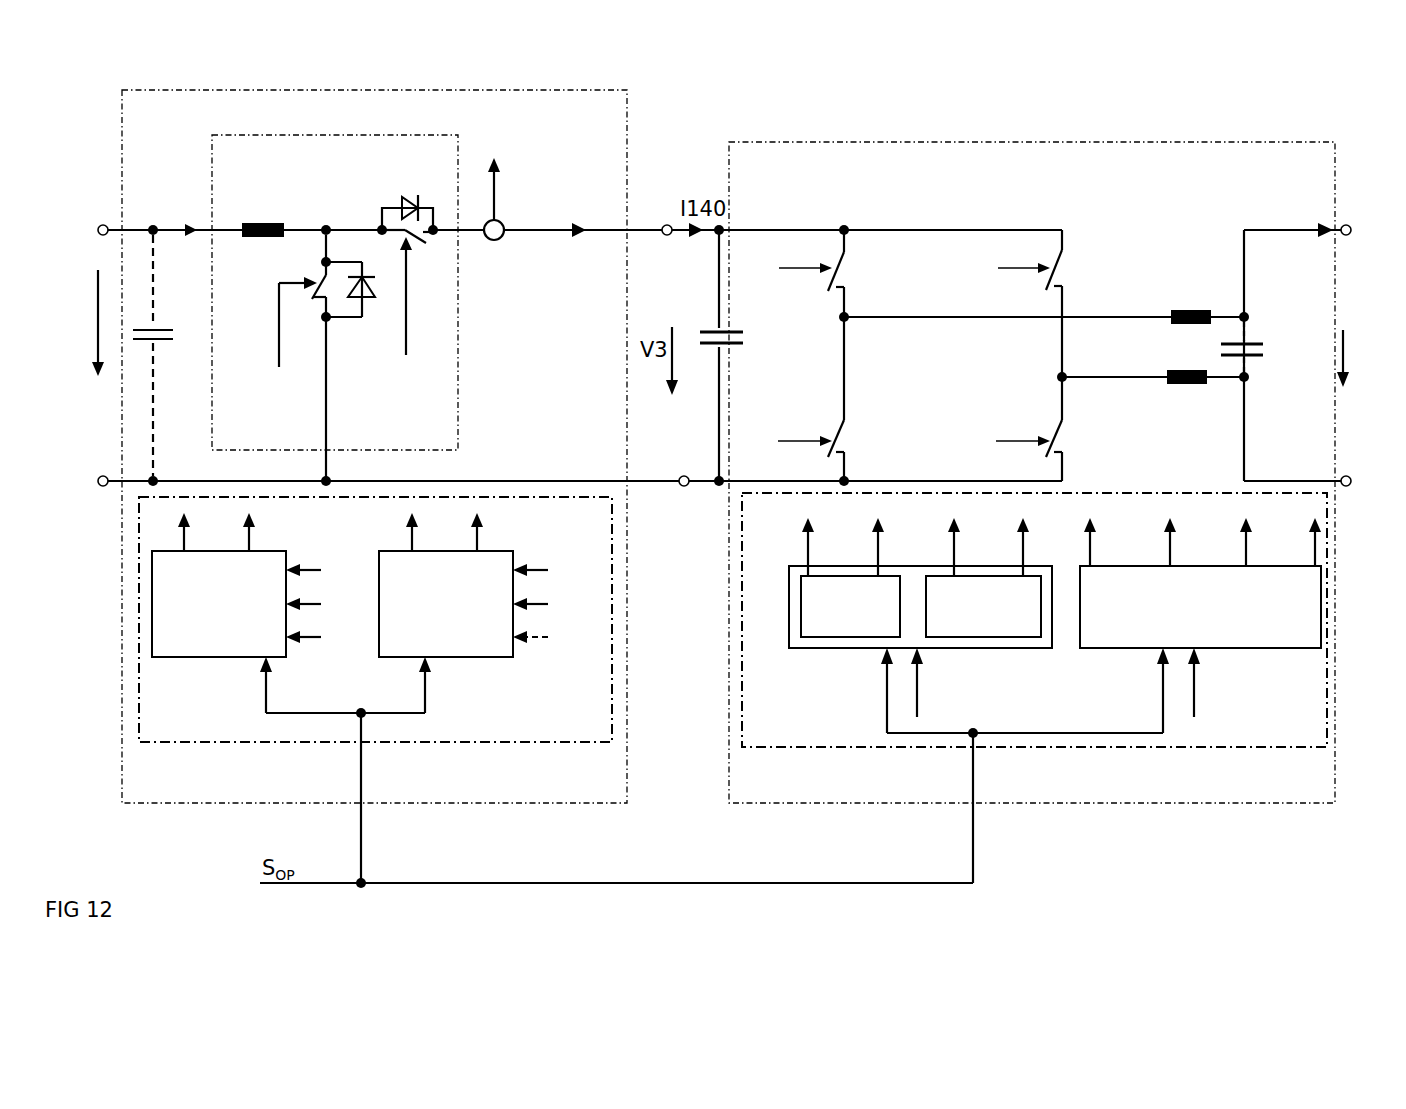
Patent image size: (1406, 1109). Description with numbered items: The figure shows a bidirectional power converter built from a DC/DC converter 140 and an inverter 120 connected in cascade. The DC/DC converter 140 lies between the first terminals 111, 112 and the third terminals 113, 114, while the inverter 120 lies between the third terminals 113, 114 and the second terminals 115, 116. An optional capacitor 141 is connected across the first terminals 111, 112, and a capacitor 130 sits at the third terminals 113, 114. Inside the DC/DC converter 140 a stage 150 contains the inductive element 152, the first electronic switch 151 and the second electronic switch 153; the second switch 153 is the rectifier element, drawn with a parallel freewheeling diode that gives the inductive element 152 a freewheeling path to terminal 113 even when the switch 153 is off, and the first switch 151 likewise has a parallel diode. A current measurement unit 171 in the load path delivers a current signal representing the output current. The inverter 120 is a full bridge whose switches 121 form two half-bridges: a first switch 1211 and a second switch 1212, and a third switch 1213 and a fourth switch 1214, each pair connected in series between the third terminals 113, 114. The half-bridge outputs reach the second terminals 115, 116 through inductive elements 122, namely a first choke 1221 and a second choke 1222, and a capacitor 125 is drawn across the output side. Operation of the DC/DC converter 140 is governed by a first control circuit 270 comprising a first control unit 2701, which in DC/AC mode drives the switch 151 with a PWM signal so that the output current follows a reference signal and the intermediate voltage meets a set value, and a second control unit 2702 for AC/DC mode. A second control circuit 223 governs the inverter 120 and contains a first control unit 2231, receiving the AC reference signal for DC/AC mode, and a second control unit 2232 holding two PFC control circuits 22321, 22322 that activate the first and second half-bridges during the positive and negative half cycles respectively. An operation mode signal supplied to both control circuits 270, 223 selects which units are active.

The first terminal 111 is at (106, 221).
The first terminal 112 is at (101, 491).
The third terminal 113 is at (665, 223).
The third terminal 114 is at (686, 491).
The second terminal 115 is at (1347, 229).
The second terminal 116 is at (1349, 490).
The inverter 120 is at (1006, 139).
The half-bridge switches 121 is at (950, 355).
The first switch 1211 is at (855, 270).
The second switch 1212 is at (852, 441).
The third switch 1213 is at (1068, 272).
The fourth switch 1214 is at (1072, 443).
The inductive elements 122 is at (1204, 356).
The first inductive element 1221 is at (1187, 310).
The second inductive element 1222 is at (1182, 388).
The output capacitor 125 is at (1212, 348).
The capacitor 130 is at (683, 328).
The DC/DC converter 140 is at (402, 78).
The capacitor 141 is at (160, 320).
The boost converter stage 150 is at (301, 123).
The first electronic switch 151 is at (296, 277).
The inductive element 152 is at (266, 223).
The second electronic switch 153 is at (420, 250).
The current measurement unit 171 is at (494, 245).
The second control circuit 223 is at (857, 750).
The first control unit 2231 is at (1268, 650).
The second control unit 2232 is at (940, 625).
The PFC control circuit 22321 is at (826, 640).
The PFC control circuit 22322 is at (1020, 640).
The first control circuit 270 is at (302, 748).
The first control unit 2701 is at (224, 668).
The second control unit 2702 is at (482, 668).